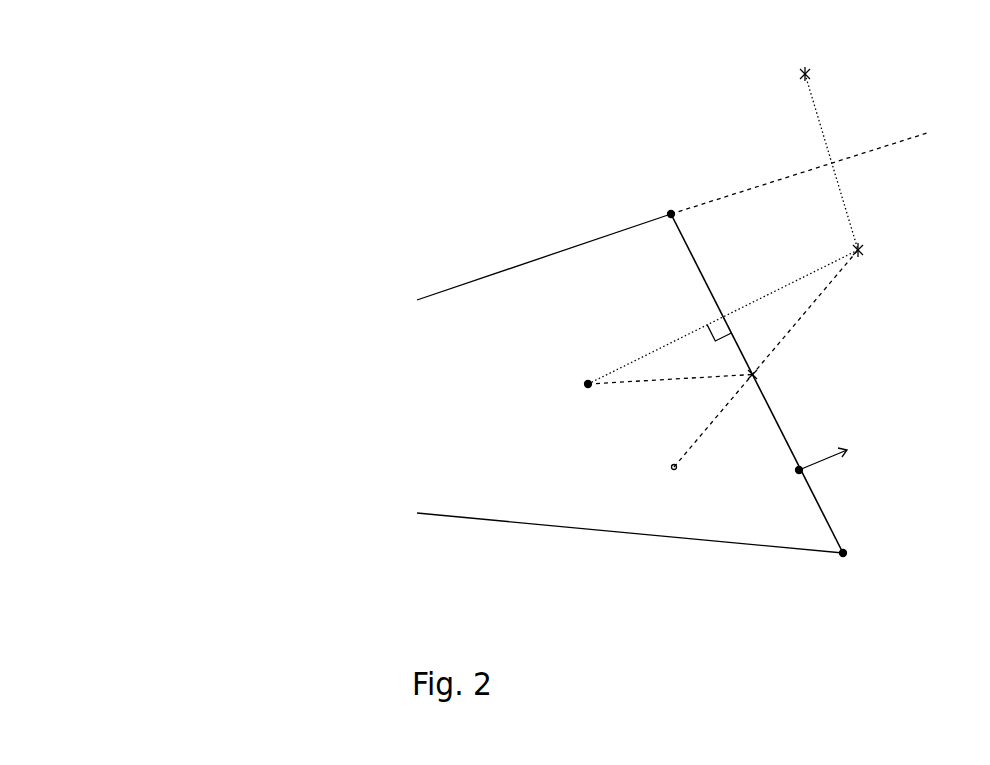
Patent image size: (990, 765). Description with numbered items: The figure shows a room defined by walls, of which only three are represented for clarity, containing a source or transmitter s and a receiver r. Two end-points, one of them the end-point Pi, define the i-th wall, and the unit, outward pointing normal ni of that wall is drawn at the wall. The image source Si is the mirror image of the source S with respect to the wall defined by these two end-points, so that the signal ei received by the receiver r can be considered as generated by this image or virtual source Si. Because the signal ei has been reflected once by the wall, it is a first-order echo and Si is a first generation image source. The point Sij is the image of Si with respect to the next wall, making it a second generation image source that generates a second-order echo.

The end-point of the i-th wall Pi is at (859, 560).
The source or transmitter S is at (575, 388).
The image source Si is at (874, 232).
The second generation image source Sij is at (881, 66).
The receiver r is at (664, 476).
The signal received by the receiver ei is at (702, 433).
The unit outward pointing normal ni is at (836, 471).